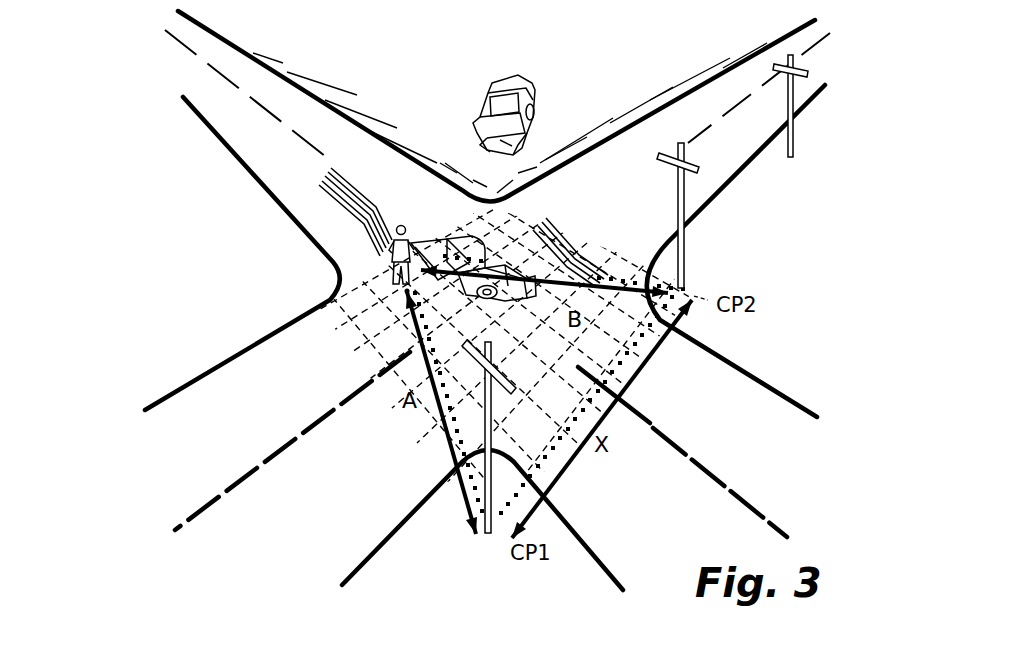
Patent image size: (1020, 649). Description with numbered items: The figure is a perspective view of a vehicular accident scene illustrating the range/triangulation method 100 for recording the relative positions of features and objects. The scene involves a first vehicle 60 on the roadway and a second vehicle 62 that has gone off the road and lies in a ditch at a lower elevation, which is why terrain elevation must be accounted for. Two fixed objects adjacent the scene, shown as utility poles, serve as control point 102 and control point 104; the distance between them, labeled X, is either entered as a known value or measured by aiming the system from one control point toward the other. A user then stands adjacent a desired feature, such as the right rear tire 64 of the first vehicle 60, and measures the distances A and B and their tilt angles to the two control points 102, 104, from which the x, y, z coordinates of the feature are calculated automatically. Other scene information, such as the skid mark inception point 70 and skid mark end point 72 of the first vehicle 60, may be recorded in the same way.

The first vehicle 60 is at (460, 247).
The second vehicle 62 is at (536, 88).
The right rear tire 64 is at (403, 293).
The skid mark inception point 70 is at (333, 167).
The skid mark end point 72 is at (393, 265).
The range/triangulation method 100 is at (797, 278).
The control point 102 is at (489, 537).
The control point 104 is at (682, 287).